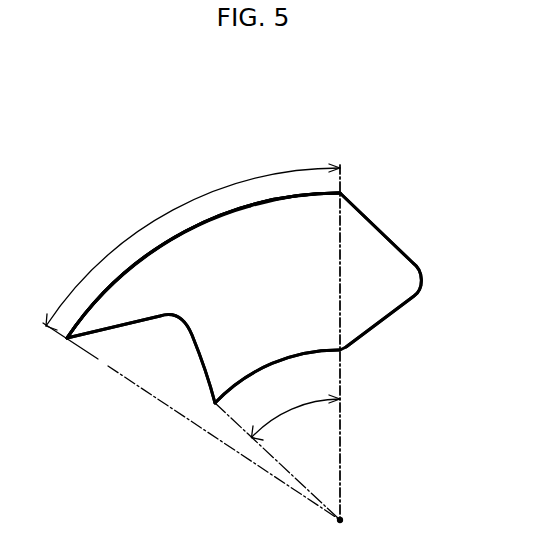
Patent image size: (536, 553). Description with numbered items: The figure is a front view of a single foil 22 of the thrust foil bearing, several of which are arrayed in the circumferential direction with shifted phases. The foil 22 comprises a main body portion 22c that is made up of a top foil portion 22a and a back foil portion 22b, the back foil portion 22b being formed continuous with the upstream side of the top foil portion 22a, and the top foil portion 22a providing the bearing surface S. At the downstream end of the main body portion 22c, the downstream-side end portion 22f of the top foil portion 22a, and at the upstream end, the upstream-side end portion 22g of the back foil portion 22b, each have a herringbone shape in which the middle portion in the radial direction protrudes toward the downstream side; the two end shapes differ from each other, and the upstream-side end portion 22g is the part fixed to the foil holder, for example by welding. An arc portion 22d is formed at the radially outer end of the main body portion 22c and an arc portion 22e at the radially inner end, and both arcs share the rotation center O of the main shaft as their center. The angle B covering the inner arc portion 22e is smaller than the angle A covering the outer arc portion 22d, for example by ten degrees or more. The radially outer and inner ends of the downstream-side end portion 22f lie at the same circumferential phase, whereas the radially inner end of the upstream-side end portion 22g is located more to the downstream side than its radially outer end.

The foil 22 is at (403, 200).
The top foil portion 22a is at (303, 243).
The back foil portion 22b is at (211, 283).
The main body portion 22c is at (203, 126).
The arc portion 22d is at (107, 283).
The arc portion 22e is at (307, 355).
The downstream-side end portion 22f is at (395, 240).
The upstream-side end portion 22g is at (123, 327).
The angle covering the arc portion at the radially outer end A is at (160, 222).
The angle covering the arc portion at the radially inner end B is at (293, 410).
The bearing surface S is at (325, 257).
The rotation center O is at (343, 520).